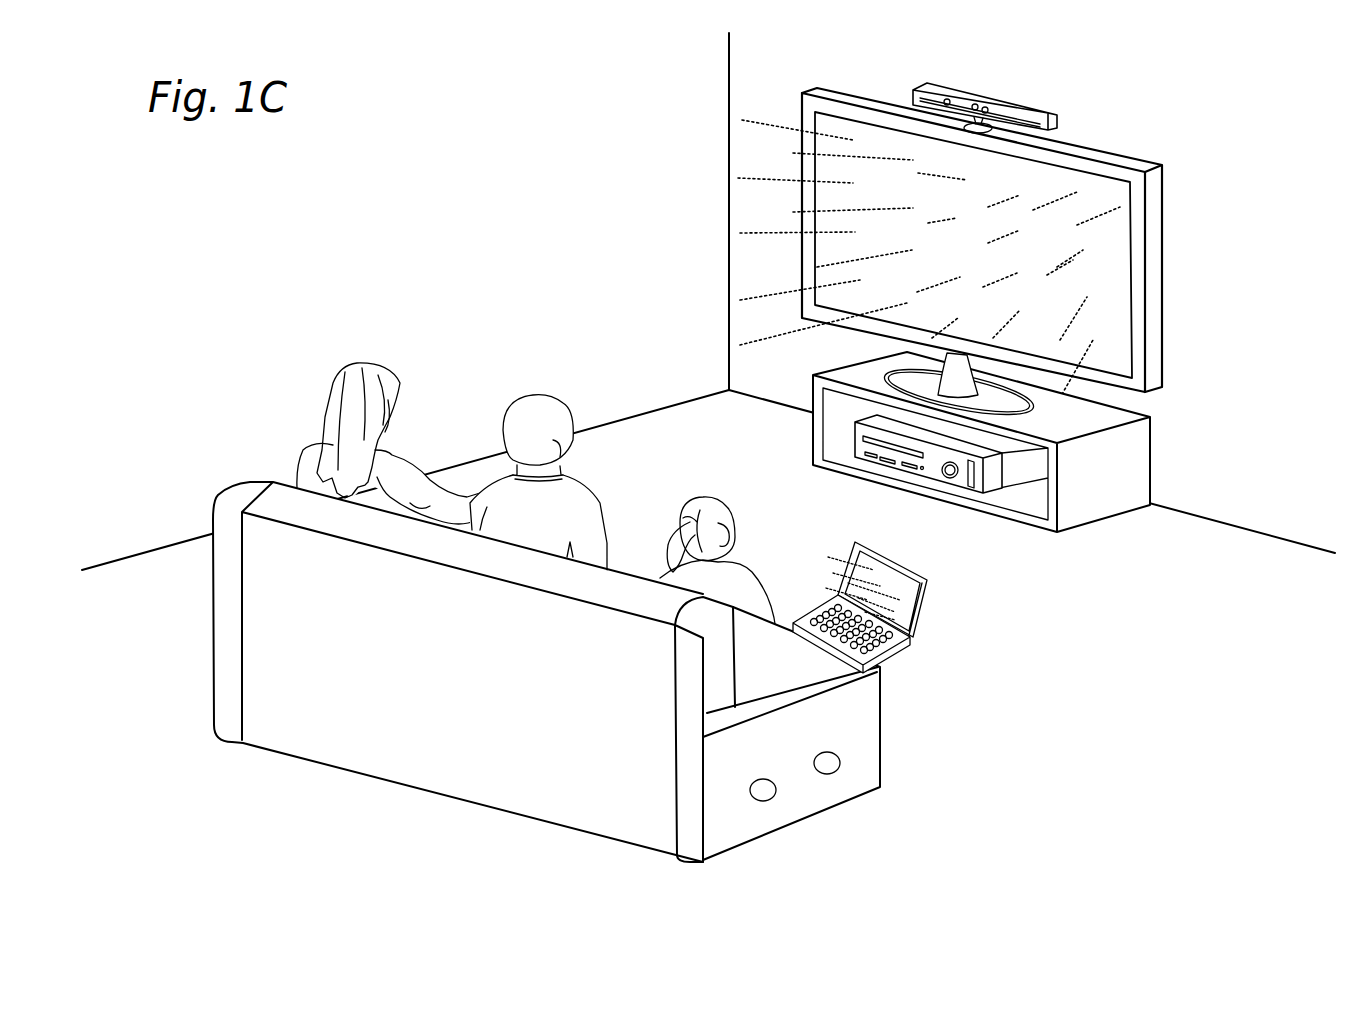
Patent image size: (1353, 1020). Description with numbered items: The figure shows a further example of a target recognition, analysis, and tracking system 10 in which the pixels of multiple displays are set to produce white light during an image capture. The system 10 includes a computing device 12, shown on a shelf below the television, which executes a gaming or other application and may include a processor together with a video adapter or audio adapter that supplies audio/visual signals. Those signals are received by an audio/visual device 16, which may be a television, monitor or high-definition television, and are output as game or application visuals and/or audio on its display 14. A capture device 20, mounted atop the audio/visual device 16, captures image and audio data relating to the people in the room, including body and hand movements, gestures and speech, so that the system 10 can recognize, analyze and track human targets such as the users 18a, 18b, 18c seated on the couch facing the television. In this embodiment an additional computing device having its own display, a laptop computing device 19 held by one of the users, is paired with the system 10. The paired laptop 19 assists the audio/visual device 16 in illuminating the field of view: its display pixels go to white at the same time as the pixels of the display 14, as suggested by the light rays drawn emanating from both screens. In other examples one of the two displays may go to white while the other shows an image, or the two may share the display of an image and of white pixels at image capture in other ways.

The target recognition, analysis, and tracking system 10 is at (1175, 75).
The computing device 12 is at (927, 480).
The display 14 is at (1133, 322).
The audio/visual (A/V) device 16 is at (1163, 217).
The user 18a is at (310, 443).
The user 18b is at (587, 503).
The user 18c is at (740, 580).
The laptop computing device 19 is at (923, 605).
The capture device 20 is at (990, 98).